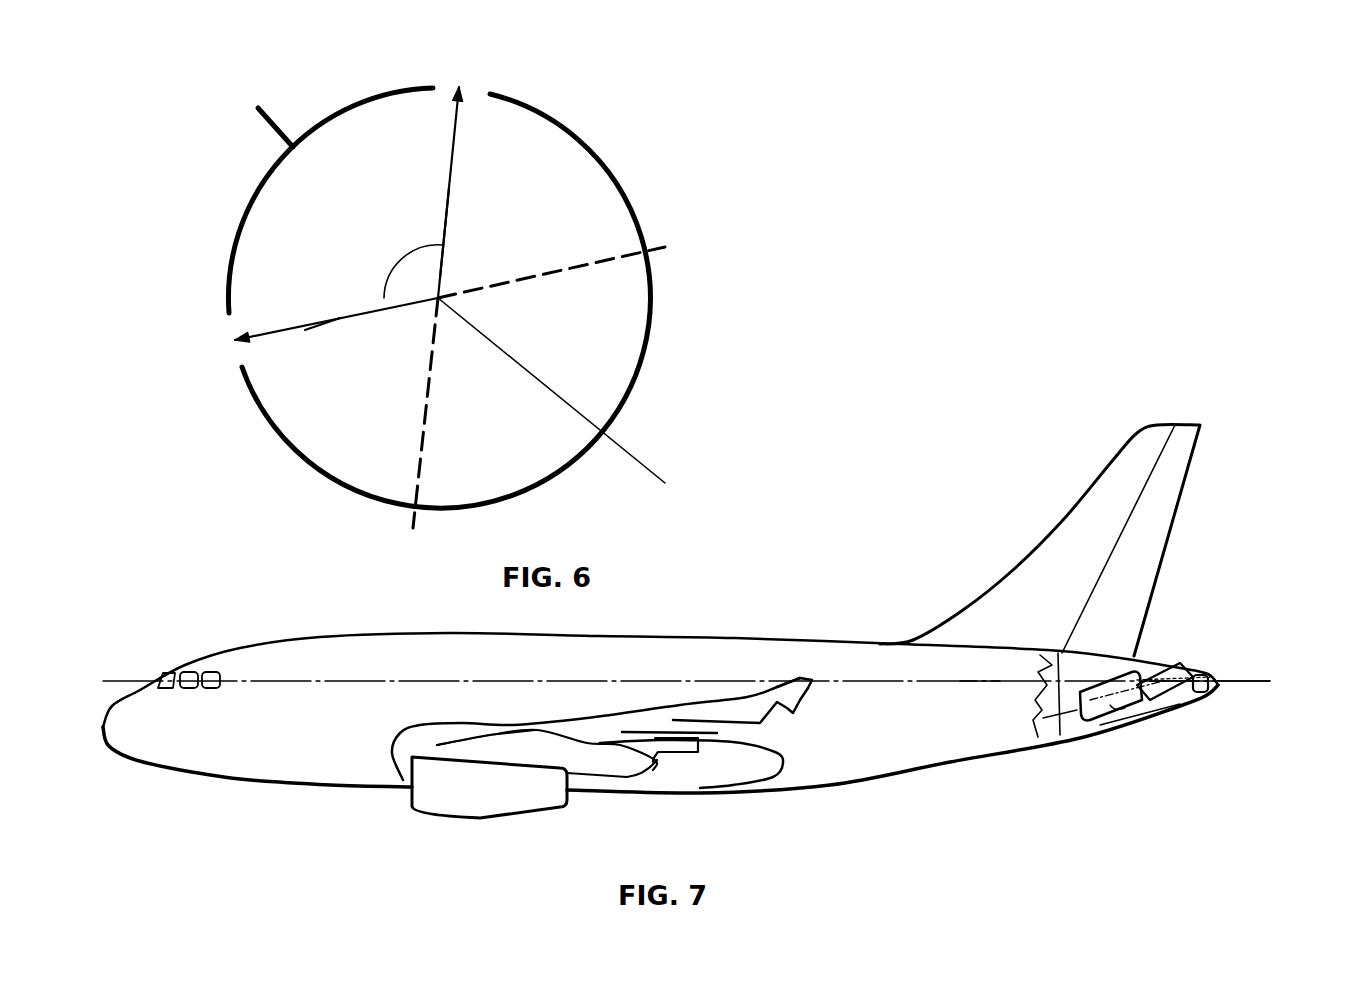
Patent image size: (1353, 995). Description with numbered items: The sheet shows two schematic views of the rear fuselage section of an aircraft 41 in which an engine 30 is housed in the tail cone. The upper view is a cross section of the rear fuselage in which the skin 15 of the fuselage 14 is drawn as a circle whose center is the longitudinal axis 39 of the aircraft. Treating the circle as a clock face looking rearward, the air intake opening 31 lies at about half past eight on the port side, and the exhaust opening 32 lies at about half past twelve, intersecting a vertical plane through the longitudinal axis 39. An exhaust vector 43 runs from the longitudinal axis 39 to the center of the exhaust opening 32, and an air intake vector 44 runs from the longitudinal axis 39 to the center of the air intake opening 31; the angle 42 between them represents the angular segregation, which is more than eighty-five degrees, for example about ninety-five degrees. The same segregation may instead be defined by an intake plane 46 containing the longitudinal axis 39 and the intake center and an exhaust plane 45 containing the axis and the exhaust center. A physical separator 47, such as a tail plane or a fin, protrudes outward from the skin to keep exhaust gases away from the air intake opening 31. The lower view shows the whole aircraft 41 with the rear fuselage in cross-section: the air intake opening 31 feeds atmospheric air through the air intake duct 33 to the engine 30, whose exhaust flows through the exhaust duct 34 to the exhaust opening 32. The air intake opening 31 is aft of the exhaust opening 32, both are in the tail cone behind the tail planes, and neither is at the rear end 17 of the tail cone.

In FIG. 6, the fuselage 14 is at (496, 298).
In FIG. 7, the fuselage 14 is at (1066, 652).
In FIG. 6, the skin 15 is at (617, 183).
In FIG. 7, the skin 15 is at (1070, 725).
In FIG. 7, the rear end 17 is at (1227, 677).
In FIG. 7, the engine 30 is at (1108, 722).
In FIG. 6, the air intake opening 31 is at (235, 328).
In FIG. 7, the air intake opening 31 is at (1208, 670).
In FIG. 6, the exhaust opening 32 is at (473, 90).
In FIG. 7, the exhaust opening 32 is at (1168, 660).
In FIG. 7, the air intake duct 33 is at (1180, 705).
In FIG. 7, the exhaust duct 34 is at (1145, 662).
In FIG. 6, the longitudinal axis 39 is at (571, 400).
In FIG. 7, the longitudinal axis 39 is at (968, 676).
In FIG. 7, the aircraft 41 is at (735, 638).
In FIG. 6, the angle 42 is at (395, 265).
In FIG. 6, the exhaust vector 43 is at (455, 172).
In FIG. 6, the air intake vector 44 is at (305, 330).
In FIG. 6, the exhaust plane 45 is at (410, 518).
In FIG. 6, the intake plane 46 is at (660, 250).
In FIG. 6, the physical separator 47 is at (257, 120).